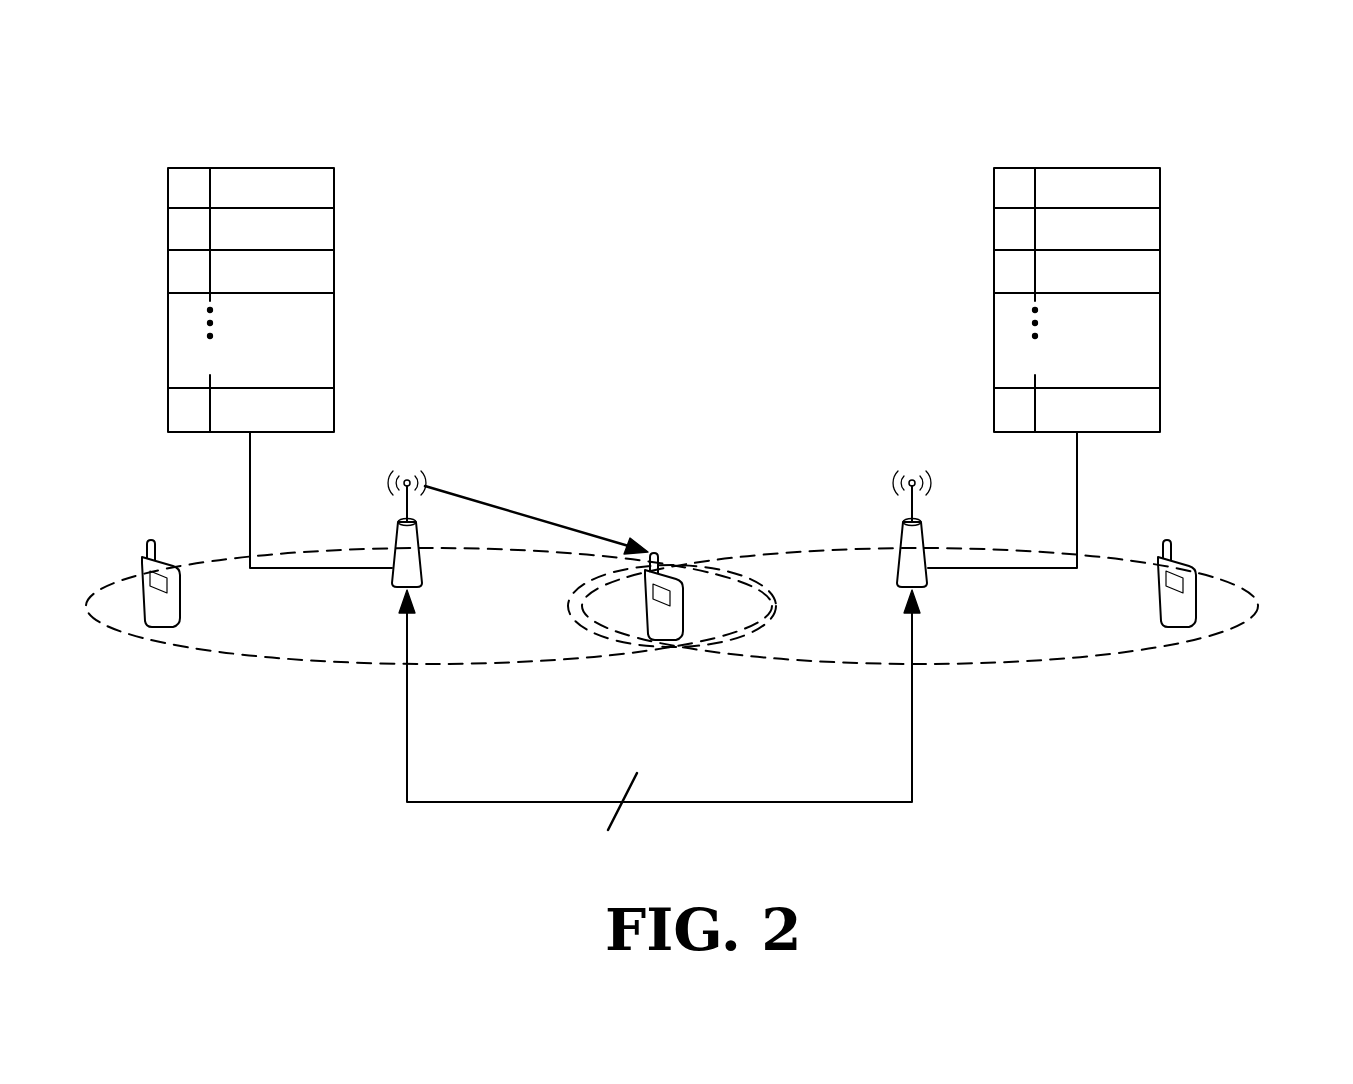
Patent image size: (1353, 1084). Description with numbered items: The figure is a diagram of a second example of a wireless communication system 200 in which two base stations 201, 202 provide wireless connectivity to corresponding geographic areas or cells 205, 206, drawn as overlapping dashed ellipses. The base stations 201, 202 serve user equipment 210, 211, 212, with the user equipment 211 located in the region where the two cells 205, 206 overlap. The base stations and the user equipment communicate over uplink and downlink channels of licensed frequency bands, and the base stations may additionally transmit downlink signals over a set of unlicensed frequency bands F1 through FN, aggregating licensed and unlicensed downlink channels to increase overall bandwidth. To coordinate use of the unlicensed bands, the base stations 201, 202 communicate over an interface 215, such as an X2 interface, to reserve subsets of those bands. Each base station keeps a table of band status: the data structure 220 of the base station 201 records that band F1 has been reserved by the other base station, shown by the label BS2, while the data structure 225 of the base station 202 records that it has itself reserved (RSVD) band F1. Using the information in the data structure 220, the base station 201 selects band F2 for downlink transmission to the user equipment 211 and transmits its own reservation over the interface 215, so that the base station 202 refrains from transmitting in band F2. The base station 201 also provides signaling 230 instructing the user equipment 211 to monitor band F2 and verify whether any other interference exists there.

The wireless communication system 200 is at (1217, 140).
The base station 201 is at (396, 548).
The base station 202 is at (900, 548).
The cell 205 is at (255, 657).
The cell 206 is at (1088, 663).
The user equipment 210 is at (140, 568).
The user equipment 211 is at (662, 645).
The user equipment 212 is at (1200, 568).
The interface 215 is at (625, 790).
The data structure 220 is at (250, 168).
The data structure 225 is at (1077, 168).
The signaling 230 is at (527, 510).